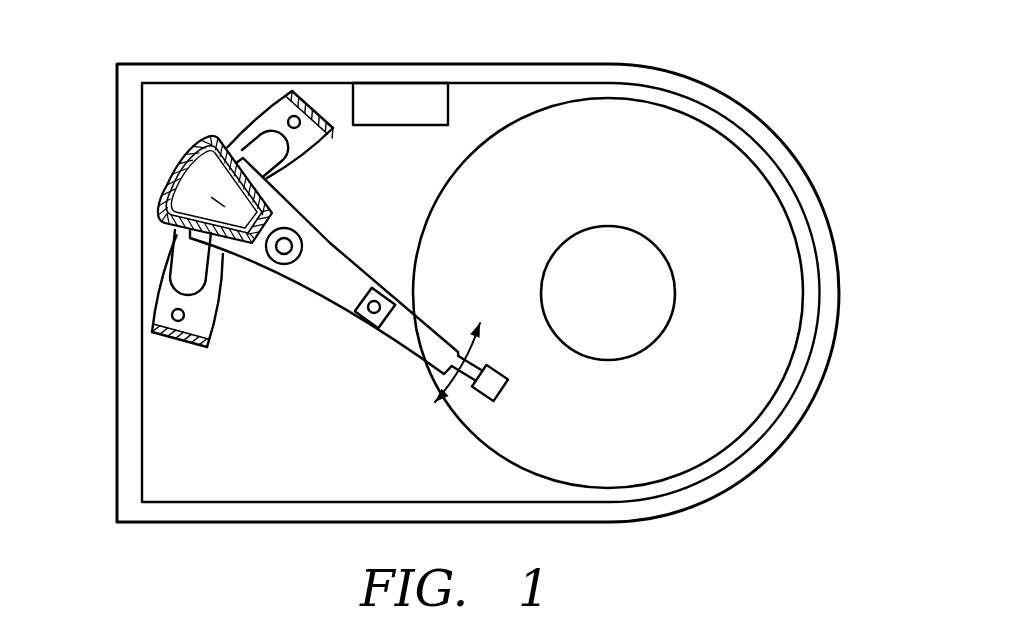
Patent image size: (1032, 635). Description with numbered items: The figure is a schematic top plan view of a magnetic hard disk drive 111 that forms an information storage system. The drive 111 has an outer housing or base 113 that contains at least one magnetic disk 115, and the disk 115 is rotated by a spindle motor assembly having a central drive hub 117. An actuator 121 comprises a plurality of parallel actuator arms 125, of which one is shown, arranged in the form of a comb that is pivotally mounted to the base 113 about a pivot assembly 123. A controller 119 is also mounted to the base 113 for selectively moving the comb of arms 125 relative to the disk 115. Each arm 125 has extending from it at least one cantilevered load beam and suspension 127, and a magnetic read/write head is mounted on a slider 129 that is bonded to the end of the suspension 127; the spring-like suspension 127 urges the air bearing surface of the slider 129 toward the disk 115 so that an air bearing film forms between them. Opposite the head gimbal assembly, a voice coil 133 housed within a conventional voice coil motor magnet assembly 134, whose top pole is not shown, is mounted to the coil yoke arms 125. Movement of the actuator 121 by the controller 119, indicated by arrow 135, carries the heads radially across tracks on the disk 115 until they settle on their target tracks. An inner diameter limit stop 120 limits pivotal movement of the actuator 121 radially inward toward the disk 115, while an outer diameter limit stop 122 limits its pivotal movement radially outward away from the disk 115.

The hard disk drive 111 is at (800, 30).
The base 113 is at (472, 63).
The magnetic disk 115 is at (746, 205).
The central drive hub 117 is at (611, 226).
The controller 119 is at (377, 96).
The inner diameter limit stop 120 is at (217, 183).
The actuator 121 is at (253, 430).
The outer diameter limit stop 122 is at (291, 116).
The pivot assembly 123 is at (306, 222).
The actuator arm 125 is at (340, 251).
The load beam and suspension 127 is at (428, 325).
The slider 129 is at (500, 393).
The voice coil 133 is at (165, 190).
The voice coil motor magnet assembly 134 is at (305, 137).
The arrow indicating actuator movement 135 is at (441, 368).